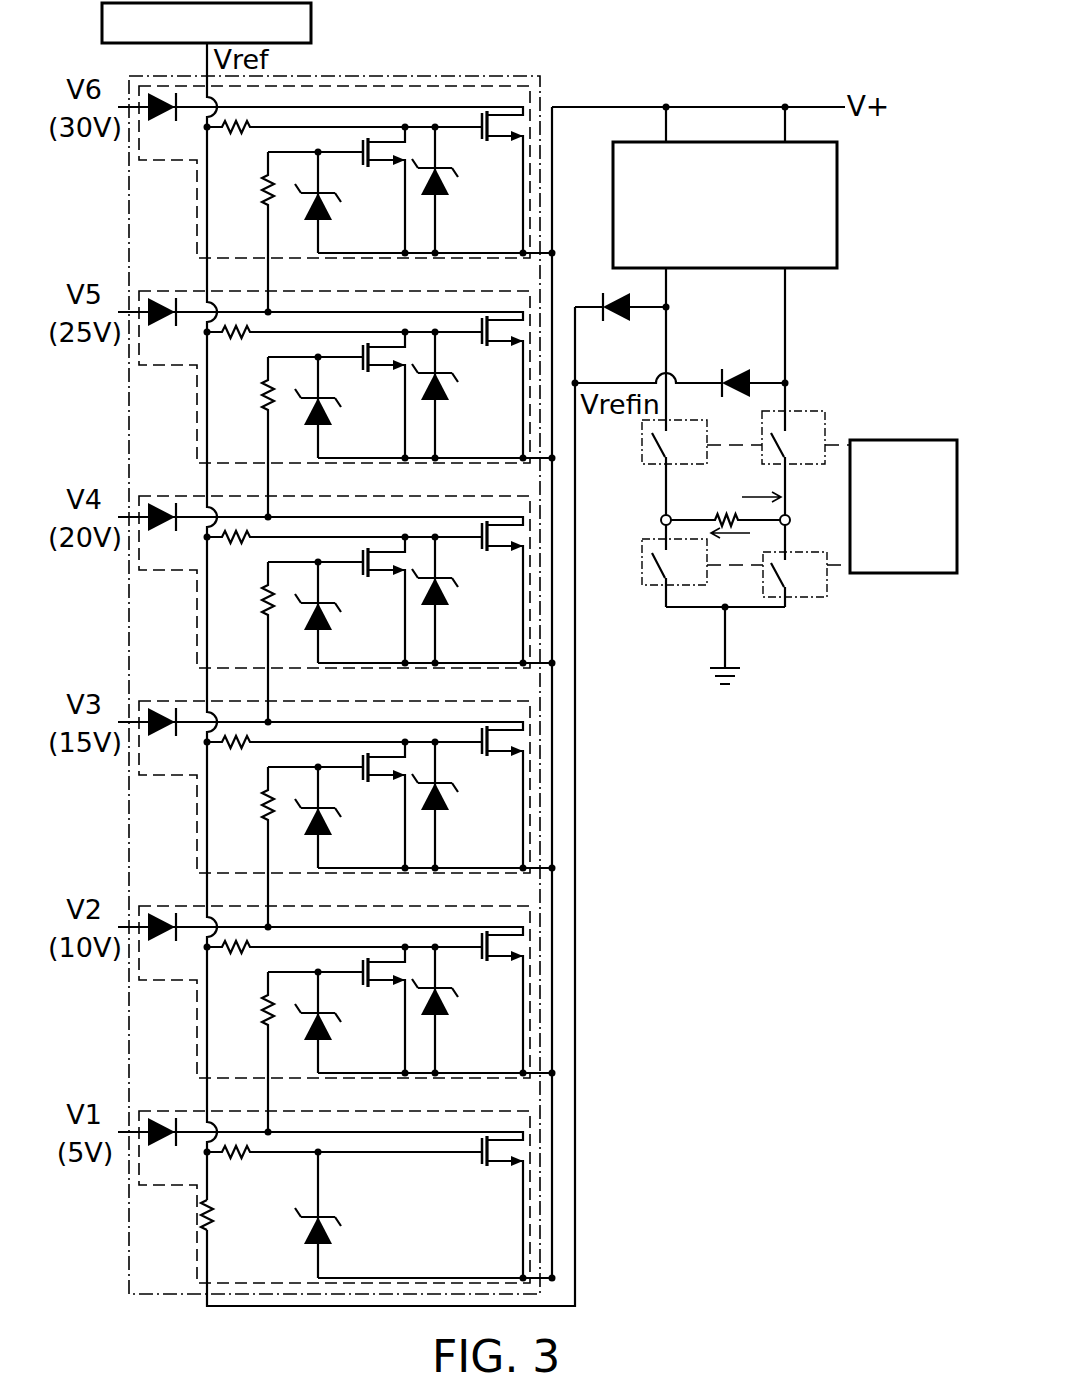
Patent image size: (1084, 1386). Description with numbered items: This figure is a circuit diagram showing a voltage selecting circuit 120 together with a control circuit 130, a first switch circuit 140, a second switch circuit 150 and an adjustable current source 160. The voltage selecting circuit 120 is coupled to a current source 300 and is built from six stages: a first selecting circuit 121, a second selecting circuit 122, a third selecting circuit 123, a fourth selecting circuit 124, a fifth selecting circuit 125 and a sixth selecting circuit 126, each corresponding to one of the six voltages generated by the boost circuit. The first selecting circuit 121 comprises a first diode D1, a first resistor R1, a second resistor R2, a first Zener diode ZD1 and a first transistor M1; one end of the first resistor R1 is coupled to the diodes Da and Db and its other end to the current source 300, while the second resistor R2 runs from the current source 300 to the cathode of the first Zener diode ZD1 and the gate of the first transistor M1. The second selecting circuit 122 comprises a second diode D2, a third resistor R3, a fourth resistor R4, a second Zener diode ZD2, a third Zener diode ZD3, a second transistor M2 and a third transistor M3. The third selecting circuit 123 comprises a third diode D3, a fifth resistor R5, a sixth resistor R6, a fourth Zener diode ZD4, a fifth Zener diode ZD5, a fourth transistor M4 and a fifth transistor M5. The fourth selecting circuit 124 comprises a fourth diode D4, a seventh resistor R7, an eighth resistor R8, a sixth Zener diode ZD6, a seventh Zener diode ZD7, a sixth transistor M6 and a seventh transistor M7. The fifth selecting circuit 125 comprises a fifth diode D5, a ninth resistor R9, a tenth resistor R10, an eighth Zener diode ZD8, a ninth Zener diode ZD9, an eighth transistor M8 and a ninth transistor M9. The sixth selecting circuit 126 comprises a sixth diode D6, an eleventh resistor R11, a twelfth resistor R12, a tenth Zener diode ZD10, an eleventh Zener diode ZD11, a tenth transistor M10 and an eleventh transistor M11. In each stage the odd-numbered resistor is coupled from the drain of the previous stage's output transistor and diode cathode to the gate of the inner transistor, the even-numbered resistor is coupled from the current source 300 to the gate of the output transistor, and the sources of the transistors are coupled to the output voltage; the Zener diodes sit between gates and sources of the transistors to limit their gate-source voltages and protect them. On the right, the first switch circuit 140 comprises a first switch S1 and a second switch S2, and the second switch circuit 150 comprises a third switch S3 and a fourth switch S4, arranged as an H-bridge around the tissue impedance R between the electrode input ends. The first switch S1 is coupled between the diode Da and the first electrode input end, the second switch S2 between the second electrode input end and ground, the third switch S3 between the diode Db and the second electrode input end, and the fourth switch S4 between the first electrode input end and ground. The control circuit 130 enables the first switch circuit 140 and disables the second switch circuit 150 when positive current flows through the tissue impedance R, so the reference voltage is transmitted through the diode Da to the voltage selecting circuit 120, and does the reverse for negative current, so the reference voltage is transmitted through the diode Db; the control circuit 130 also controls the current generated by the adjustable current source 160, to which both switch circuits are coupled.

The current source 300 is at (312, 18).
The voltage selecting circuit 120 is at (469, 76).
The first selecting circuit 121 is at (197, 1213).
The second selecting circuit 122 is at (197, 1030).
The third selecting circuit 123 is at (197, 805).
The fourth selecting circuit 124 is at (197, 617).
The fifth selecting circuit 125 is at (197, 417).
The sixth selecting circuit 126 is at (197, 212).
The control circuit 130 is at (897, 575).
The first switch circuit 140 is at (642, 442).
The second switch circuit 150 is at (693, 537).
The adjustable current source 160 is at (838, 205).
The first diode D1 is at (165, 1150).
The second diode D2 is at (165, 945).
The third diode D3 is at (165, 740).
The fourth diode D4 is at (165, 535).
The fifth diode D5 is at (165, 330).
The sixth diode D6 is at (165, 125).
The diode Da is at (620, 326).
The diode Db is at (680, 367).
The tissue impedance R is at (725, 503).
The first resistor R1 is at (227, 1216).
The second resistor R2 is at (344, 1168).
The third resistor R3 is at (247, 1052).
The fourth resistor R4 is at (344, 964).
The fifth resistor R5 is at (247, 847).
The sixth resistor R6 is at (344, 759).
The seventh resistor R7 is at (247, 642).
The eighth resistor R8 is at (344, 554).
The ninth resistor R9 is at (247, 437).
The tenth resistor R10 is at (344, 349).
The eleventh resistor R11 is at (242, 232).
The twelfth resistor R12 is at (344, 144).
The first Zener diode ZD1 is at (339, 1215).
The second Zener diode ZD2 is at (458, 1010).
The third Zener diode ZD3 is at (339, 1022).
The fourth Zener diode ZD4 is at (458, 805).
The fifth Zener diode ZD5 is at (339, 817).
The sixth Zener diode ZD6 is at (458, 600).
The seventh Zener diode ZD7 is at (339, 612).
The eighth Zener diode ZD8 is at (458, 395).
The ninth Zener diode ZD9 is at (339, 407).
The tenth Zener diode ZD10 is at (462, 190).
The eleventh Zener diode ZD11 is at (343, 202).
The first transistor M1 is at (498, 1207).
The second transistor M2 is at (498, 1002).
The third transistor M3 is at (381, 1010).
The fourth transistor M4 is at (498, 797).
The fifth transistor M5 is at (381, 805).
The sixth transistor M6 is at (498, 592).
The seventh transistor M7 is at (381, 600).
The eighth transistor M8 is at (498, 387).
The ninth transistor M9 is at (381, 395).
The tenth transistor M10 is at (493, 182).
The eleventh transistor M11 is at (377, 190).
The first switch S1 is at (674, 467).
The second switch S2 is at (795, 566).
The third switch S3 is at (793, 463).
The fourth switch S4 is at (674, 566).